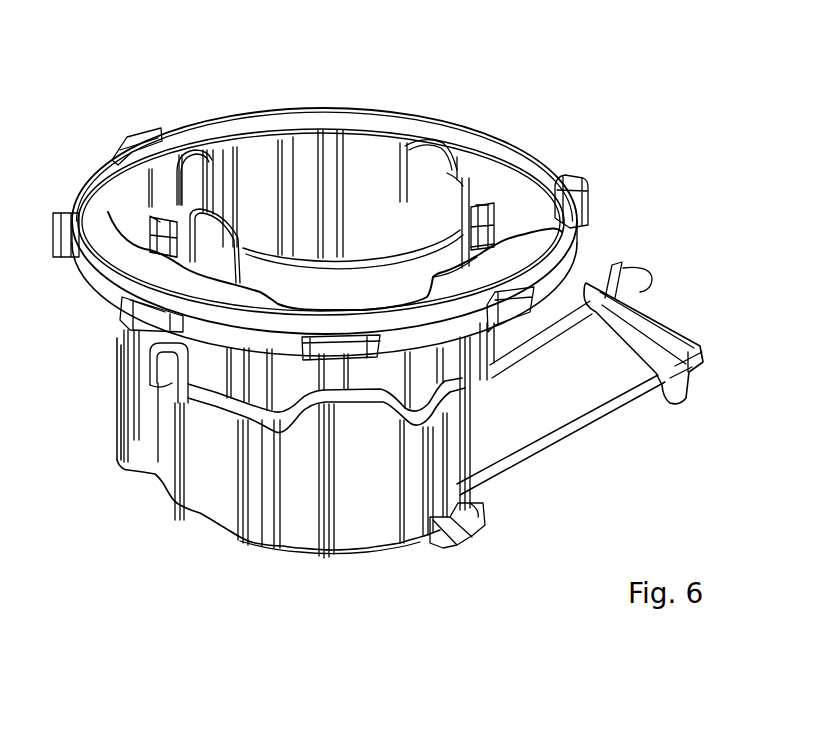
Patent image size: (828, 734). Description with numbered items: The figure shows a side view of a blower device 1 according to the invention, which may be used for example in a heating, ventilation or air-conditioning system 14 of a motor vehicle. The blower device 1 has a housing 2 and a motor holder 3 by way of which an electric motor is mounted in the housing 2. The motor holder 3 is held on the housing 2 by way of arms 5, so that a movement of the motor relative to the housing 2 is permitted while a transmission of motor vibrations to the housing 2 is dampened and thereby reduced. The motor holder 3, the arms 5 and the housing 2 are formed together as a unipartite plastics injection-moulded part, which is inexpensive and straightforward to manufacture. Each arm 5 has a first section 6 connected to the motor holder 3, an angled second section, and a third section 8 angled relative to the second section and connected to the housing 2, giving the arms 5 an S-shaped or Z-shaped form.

The blower device 1 is at (641, 138).
The housing 2 is at (208, 137).
The motor holder 3 is at (368, 150).
The arms 5 is at (150, 216).
The first section 6 is at (163, 248).
The third section 8 is at (492, 215).
The heating, ventilation or air-conditioning system 14 is at (672, 213).